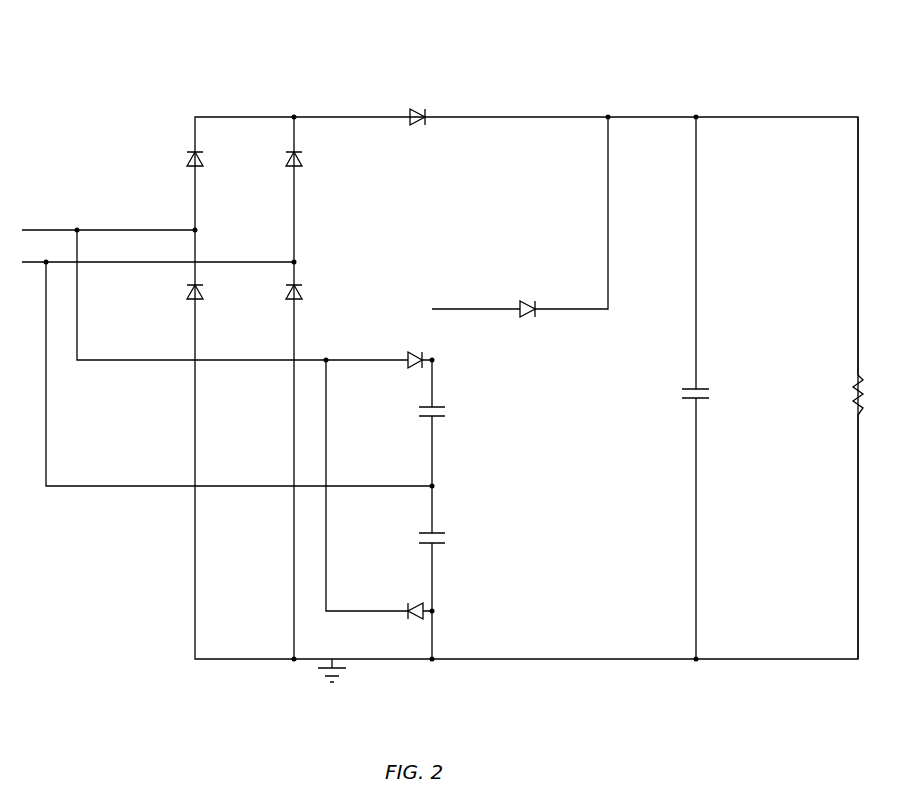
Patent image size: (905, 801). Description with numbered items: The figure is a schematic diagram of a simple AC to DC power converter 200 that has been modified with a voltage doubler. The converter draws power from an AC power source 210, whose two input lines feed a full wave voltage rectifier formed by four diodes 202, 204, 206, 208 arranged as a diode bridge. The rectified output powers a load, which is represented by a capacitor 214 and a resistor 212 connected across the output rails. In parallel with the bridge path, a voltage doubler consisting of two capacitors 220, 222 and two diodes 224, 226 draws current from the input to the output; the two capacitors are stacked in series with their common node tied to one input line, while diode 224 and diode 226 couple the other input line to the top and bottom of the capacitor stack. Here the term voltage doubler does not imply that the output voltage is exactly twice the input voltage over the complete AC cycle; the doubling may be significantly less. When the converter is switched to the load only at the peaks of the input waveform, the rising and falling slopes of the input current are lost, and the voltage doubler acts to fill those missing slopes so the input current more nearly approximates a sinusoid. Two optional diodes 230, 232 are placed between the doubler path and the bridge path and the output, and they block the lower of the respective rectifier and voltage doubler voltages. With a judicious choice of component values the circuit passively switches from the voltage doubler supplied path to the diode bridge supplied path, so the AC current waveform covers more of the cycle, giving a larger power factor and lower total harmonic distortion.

The AC to DC power converter 200 is at (745, 78).
The diode 202 is at (191, 165).
The diode 204 is at (290, 165).
The diode 206 is at (191, 298).
The diode 208 is at (290, 298).
The power source 210 is at (46, 206).
The resistor 212 is at (857, 417).
The capacitor 214 is at (690, 400).
The capacitor 220 is at (446, 417).
The capacitor 222 is at (446, 544).
The diode 224 is at (408, 354).
The diode 226 is at (409, 607).
The diode 230 is at (520, 303).
The diode 232 is at (410, 111).